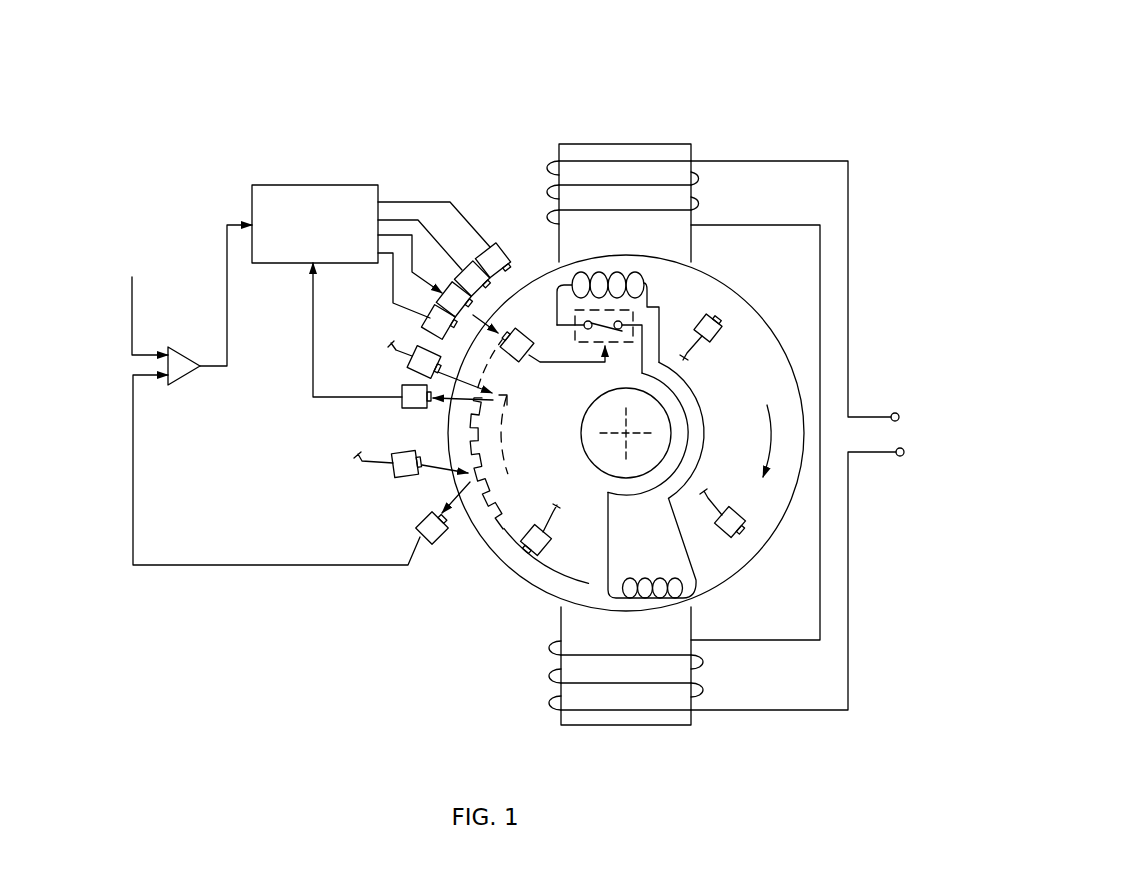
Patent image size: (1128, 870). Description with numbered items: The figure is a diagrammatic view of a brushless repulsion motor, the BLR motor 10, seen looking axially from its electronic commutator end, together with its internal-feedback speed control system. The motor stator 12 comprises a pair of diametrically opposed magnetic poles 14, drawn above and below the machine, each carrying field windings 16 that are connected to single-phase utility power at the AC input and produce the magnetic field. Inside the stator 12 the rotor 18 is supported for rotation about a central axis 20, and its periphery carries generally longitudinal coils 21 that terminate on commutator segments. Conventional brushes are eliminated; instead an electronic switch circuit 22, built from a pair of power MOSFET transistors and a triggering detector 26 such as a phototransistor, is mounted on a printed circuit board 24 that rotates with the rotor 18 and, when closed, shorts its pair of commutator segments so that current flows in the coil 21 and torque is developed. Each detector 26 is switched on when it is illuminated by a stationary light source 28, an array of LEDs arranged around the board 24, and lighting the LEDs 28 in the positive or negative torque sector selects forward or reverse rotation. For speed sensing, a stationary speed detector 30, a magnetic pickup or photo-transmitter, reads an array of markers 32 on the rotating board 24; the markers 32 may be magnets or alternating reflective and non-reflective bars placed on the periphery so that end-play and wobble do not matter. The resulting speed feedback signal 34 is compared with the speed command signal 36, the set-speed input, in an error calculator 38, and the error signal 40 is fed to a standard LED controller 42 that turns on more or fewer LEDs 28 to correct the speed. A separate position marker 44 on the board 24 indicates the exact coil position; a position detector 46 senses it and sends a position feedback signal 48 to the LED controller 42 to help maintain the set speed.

The BLR motor 10 is at (743, 72).
The motor stator 12 is at (575, 142).
The magnetic poles 14 is at (649, 152).
The field windings 16 is at (705, 179).
The rotor 18 is at (759, 318).
The central axis 20 is at (628, 434).
The coils 21 is at (629, 283).
The electronic switch circuit 22 is at (622, 348).
The printed circuit board 24 is at (545, 578).
The detector 26 is at (524, 366).
The LEDs 28 is at (498, 232).
The speed detector 30 is at (422, 521).
The markers 32 is at (485, 497).
The speed feedback signal 34 is at (277, 568).
The speed command signal 36 is at (132, 320).
The error calculator 38 is at (178, 373).
The error signal 40 is at (227, 313).
The LED controller 42 is at (302, 185).
The position marker 44 is at (519, 434).
The position detector 46 is at (414, 409).
The position feedback signal 48 is at (313, 358).